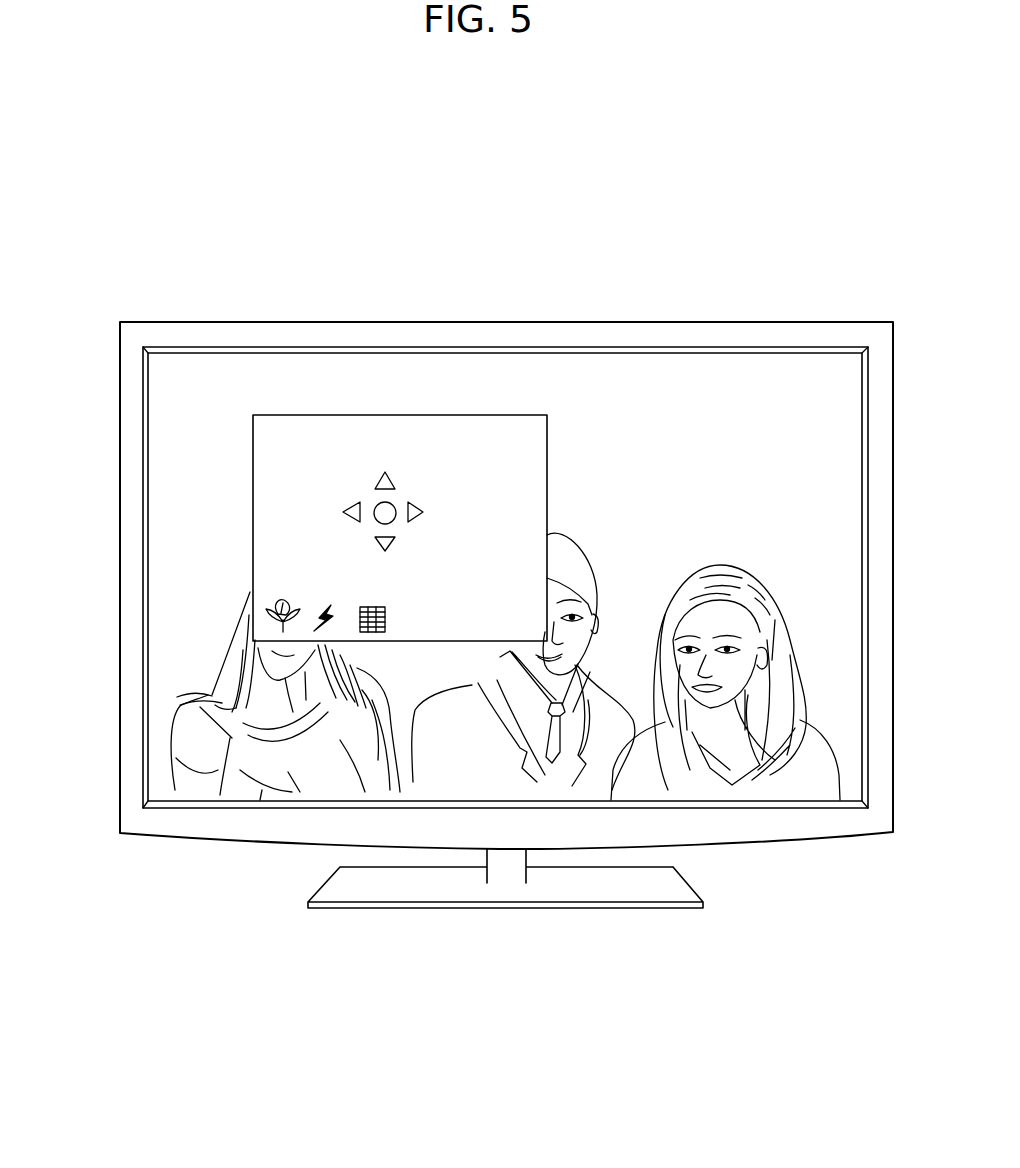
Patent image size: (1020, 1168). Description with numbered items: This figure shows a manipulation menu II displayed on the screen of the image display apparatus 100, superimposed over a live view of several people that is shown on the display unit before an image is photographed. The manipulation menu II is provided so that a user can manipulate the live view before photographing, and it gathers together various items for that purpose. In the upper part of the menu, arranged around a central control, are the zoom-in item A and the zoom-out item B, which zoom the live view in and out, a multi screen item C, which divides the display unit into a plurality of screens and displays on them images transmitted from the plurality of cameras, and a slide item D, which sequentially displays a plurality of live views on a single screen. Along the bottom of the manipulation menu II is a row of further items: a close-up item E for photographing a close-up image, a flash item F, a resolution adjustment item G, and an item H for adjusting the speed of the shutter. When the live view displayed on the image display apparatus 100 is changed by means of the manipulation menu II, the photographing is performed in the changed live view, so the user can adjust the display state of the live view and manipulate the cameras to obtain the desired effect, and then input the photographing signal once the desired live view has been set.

The image display apparatus 100 is at (647, 322).
The manipulation menu II is at (485, 415).
The zoom-in item A is at (350, 510).
The zoom-out item B is at (418, 508).
The multi screen item C is at (378, 484).
The slide item D is at (378, 538).
The close-up item E is at (289, 632).
The flash item F is at (322, 632).
The resolution adjustment item G is at (377, 632).
The shutter speed item H is at (432, 632).